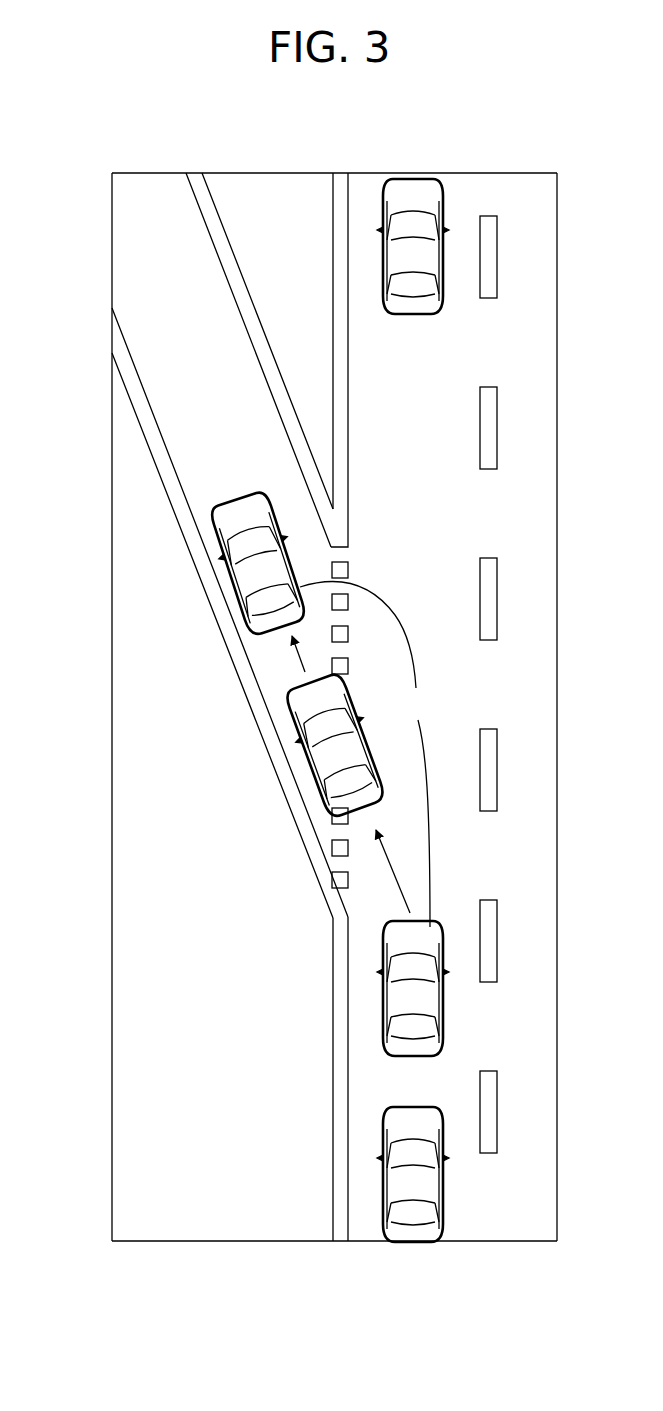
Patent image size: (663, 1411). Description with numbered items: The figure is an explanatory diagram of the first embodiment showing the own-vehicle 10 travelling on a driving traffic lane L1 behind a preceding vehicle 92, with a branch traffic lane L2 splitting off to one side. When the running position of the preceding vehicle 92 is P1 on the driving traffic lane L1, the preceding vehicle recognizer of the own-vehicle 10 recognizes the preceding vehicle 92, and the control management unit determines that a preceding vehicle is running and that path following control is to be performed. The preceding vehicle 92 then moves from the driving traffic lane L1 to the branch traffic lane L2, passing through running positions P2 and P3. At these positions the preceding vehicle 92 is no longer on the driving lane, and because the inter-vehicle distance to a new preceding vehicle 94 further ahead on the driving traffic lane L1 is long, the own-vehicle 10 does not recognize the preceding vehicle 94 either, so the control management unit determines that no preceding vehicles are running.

The own-vehicle 10 is at (385, 1137).
The preceding vehicle 92 is at (357, 725).
The new preceding vehicle 94 is at (408, 193).
The driving traffic lane L1 is at (465, 185).
The branch traffic lane L2 is at (170, 395).
The running position P1 is at (387, 993).
The running position P2 is at (312, 757).
The running position P3 is at (247, 588).